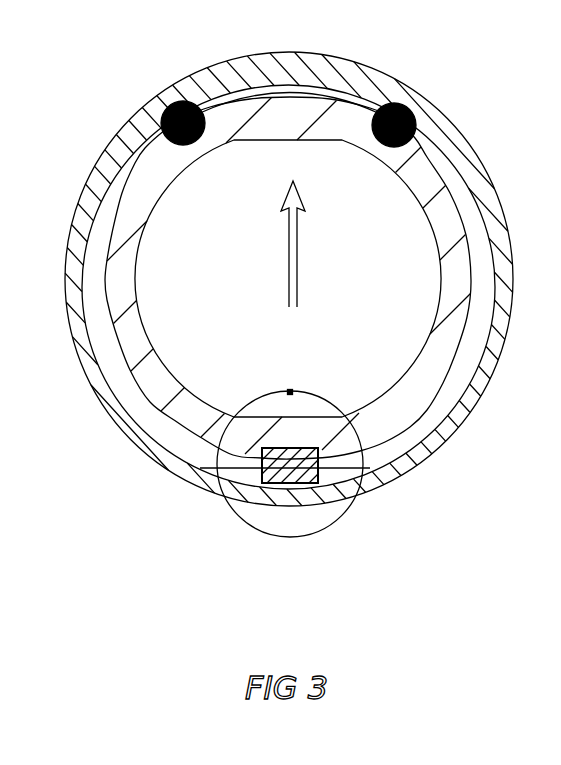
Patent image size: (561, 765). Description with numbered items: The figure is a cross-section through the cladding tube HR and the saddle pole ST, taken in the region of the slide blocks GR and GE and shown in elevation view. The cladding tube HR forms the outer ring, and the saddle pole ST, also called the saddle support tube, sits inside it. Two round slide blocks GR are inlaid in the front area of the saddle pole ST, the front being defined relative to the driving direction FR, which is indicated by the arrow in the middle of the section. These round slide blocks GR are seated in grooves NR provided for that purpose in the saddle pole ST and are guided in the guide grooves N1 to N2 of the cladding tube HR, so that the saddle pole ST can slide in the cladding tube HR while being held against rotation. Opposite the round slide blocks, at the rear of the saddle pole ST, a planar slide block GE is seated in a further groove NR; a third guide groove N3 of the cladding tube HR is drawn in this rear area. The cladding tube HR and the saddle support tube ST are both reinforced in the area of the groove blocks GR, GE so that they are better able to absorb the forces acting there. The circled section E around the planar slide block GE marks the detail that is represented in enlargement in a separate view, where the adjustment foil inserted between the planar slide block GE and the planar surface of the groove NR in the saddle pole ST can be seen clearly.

The cladding tube HR is at (452, 426).
The saddle pole ST is at (127, 270).
The round slide block GR is at (170, 105).
The guide groove N1 is at (162, 122).
The guide groove N2 is at (398, 103).
The third groove / element N3 is at (268, 483).
The groove NR is at (197, 143).
The driving direction FR is at (300, 245).
The section E is at (290, 390).
The planar slide block GE is at (318, 465).